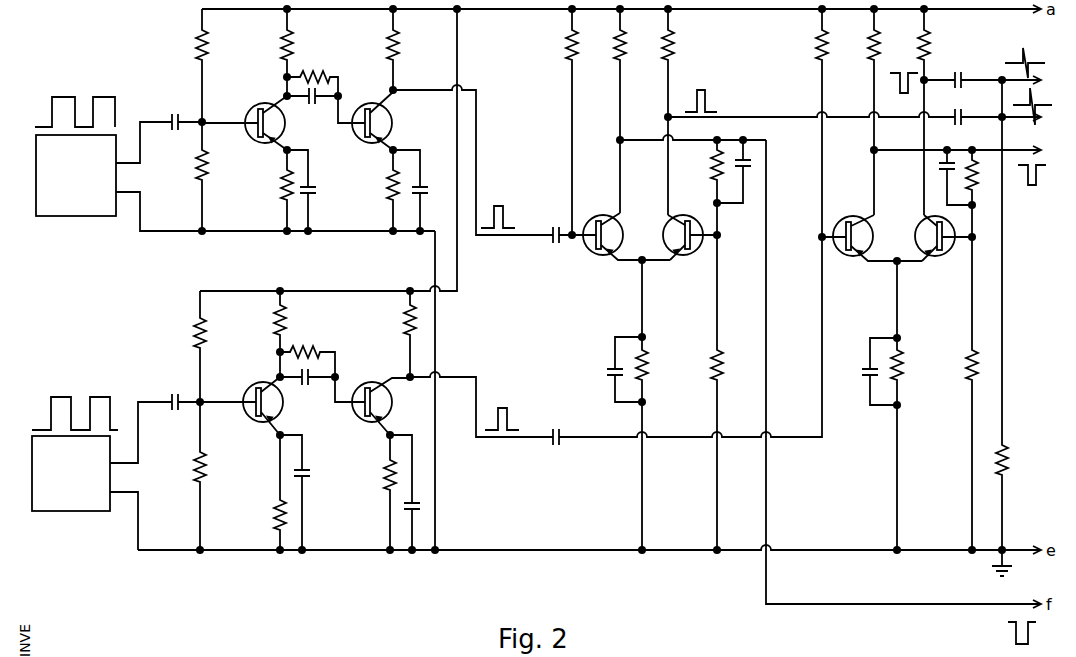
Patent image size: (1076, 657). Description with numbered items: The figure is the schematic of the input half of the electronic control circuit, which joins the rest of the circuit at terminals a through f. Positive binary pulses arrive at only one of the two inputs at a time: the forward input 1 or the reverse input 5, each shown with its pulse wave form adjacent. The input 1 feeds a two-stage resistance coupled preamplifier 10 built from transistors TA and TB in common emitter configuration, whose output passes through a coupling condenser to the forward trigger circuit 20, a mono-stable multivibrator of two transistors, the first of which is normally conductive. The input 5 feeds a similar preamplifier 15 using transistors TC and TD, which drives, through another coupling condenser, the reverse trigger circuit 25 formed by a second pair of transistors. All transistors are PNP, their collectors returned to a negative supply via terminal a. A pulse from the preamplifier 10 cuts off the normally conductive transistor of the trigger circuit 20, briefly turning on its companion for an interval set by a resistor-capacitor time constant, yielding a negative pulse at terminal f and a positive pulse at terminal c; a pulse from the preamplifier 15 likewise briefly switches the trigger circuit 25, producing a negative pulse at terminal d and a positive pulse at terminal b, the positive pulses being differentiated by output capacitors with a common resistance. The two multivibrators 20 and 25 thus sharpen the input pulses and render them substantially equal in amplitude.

The input 1 is at (36, 163).
The input 5 is at (36, 463).
The preamplifier 10 is at (324, 147).
The preamplifier 15 is at (325, 427).
The forward trigger circuit 20 is at (656, 219).
The reverse trigger circuit 25 is at (904, 231).